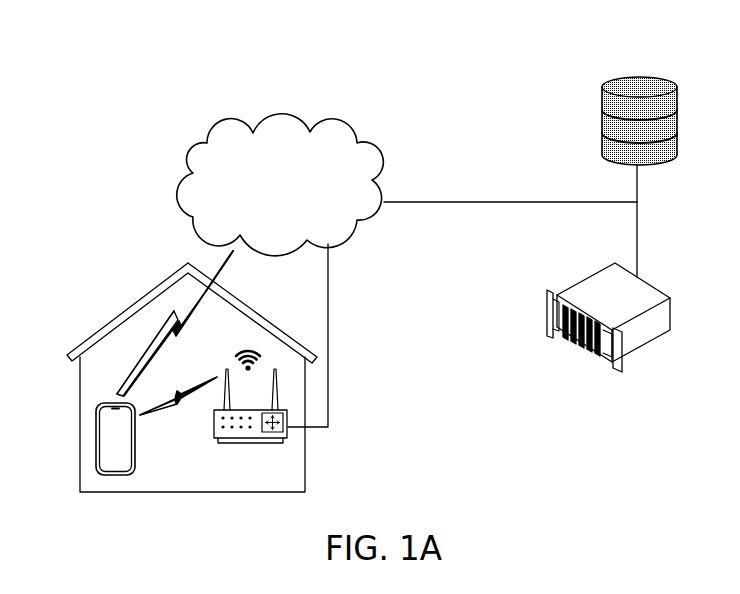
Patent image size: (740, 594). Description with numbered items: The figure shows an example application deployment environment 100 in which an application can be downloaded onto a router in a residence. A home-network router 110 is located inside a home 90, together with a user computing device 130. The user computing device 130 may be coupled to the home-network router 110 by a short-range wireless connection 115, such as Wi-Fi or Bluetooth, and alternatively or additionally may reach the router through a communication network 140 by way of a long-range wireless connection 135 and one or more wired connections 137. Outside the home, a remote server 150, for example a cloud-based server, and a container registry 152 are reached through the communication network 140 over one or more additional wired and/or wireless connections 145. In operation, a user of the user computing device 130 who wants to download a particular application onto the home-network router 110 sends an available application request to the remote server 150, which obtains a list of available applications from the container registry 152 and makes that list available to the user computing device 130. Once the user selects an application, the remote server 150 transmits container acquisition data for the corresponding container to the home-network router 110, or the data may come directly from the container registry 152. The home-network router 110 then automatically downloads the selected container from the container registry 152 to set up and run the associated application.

The application deployment environment 100 is at (134, 86).
The communication network 140 is at (300, 196).
The wired and/or wireless connections 145 is at (507, 201).
The container registry 152 is at (610, 103).
The remote server 150 is at (547, 302).
The wired connections 137 is at (330, 328).
The home 90 is at (306, 460).
The long-range wireless connection 135 is at (170, 313).
The user computing device 130 is at (98, 430).
The short-range wireless connection 115 is at (176, 404).
The home-network router 110 is at (240, 443).